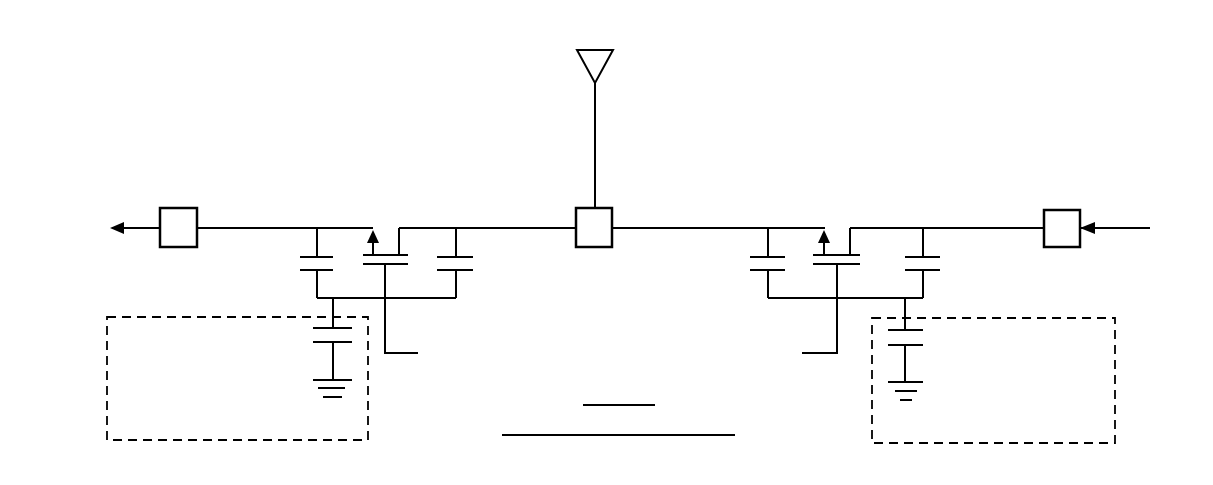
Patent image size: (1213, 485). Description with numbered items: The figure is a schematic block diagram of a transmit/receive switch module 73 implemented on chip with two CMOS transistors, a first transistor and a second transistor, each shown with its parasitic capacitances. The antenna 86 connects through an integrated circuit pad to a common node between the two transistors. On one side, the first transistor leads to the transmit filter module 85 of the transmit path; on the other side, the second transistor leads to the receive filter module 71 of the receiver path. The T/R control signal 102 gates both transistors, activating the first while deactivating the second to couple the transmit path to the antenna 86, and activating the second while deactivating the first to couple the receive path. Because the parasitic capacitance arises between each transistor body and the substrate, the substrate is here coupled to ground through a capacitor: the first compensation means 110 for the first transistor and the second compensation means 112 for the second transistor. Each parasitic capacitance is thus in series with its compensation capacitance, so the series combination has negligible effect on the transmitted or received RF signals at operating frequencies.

The T/R switch module 73 is at (631, 232).
The antenna 86 is at (594, 134).
The receive filter module 71 is at (123, 225).
The transmit filter module 85 is at (1128, 230).
The T/R control signal 102 is at (611, 322).
The first compensation means 110 is at (993, 370).
The second compensation means 112 is at (237, 369).